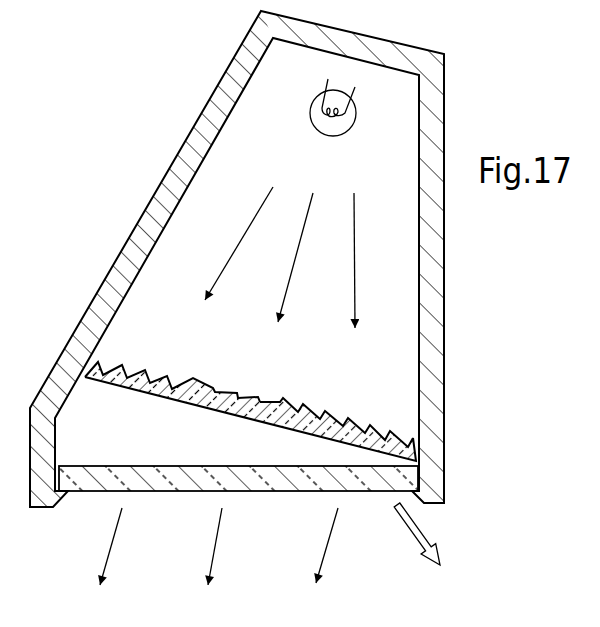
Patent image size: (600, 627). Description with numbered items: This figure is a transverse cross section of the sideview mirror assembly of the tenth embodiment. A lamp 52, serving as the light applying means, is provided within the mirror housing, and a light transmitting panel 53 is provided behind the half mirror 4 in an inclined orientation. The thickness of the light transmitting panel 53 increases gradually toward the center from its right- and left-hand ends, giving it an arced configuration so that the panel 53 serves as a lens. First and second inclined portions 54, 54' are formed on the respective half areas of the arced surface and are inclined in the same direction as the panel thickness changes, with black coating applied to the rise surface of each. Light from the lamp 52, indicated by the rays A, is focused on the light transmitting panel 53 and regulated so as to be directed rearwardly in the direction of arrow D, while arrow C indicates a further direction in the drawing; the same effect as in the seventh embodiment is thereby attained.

The half mirror 4 is at (285, 482).
The lamp 52 is at (356, 118).
The light transmitting panel 53 is at (250, 381).
The first inclined portion 54 is at (336, 398).
The second inclined portion 54' is at (172, 352).
The incident light rays A is at (353, 258).
The direction of light emission C is at (426, 538).
The arrow D is at (107, 553).